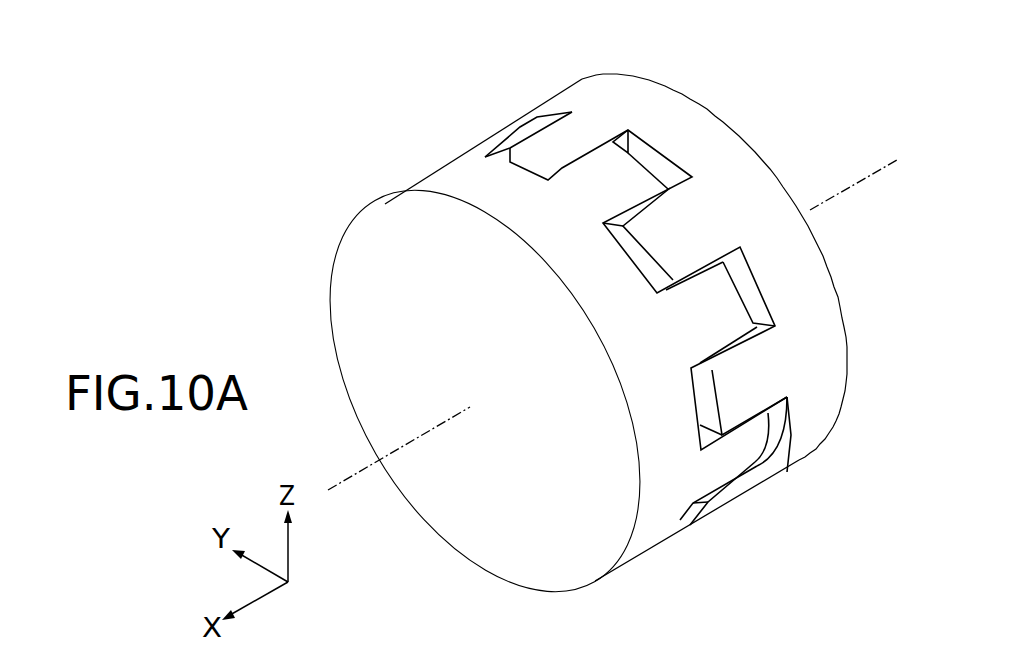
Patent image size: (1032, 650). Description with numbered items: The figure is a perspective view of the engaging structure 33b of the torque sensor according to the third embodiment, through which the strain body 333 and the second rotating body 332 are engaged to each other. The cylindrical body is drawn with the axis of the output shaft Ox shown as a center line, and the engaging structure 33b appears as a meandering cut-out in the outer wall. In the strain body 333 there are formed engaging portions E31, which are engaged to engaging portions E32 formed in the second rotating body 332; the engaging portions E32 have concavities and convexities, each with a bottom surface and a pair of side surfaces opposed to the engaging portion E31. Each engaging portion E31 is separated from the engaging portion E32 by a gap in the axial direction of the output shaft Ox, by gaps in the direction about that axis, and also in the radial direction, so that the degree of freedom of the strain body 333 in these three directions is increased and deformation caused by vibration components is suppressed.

The second rotating body 332 is at (445, 172).
The strain body 333 is at (642, 77).
The engaging structure 33b is at (528, 90).
The engaging portion E31 is at (743, 388).
The engaging portion E32 is at (732, 460).
The output shaft Ox is at (353, 480).